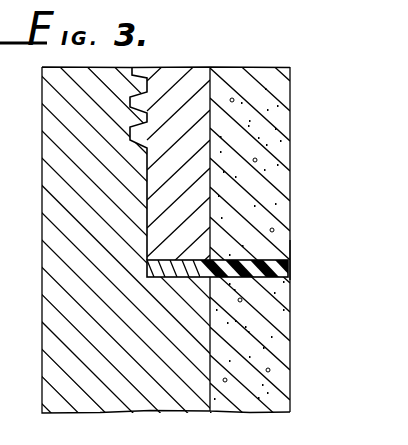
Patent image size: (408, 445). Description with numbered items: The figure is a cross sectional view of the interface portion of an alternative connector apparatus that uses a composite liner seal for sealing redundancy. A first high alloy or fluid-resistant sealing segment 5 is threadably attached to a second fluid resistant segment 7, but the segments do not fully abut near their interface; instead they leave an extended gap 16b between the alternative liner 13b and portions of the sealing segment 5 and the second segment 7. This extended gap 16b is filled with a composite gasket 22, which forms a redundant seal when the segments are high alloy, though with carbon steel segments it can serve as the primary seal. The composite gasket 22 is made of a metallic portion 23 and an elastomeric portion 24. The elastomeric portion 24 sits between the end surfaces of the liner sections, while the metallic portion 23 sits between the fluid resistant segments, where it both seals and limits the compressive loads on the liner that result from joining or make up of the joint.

The first high alloy or fluid-resistant sealing segment 5 is at (184, 69).
The second fluid resistant segment 7 is at (42, 262).
The alternative liner 13b is at (266, 69).
The extended gap 16b is at (300, 257).
The composite gasket 22 is at (193, 280).
The metallic portion 23 is at (147, 265).
The elastomeric portion 24 is at (290, 276).